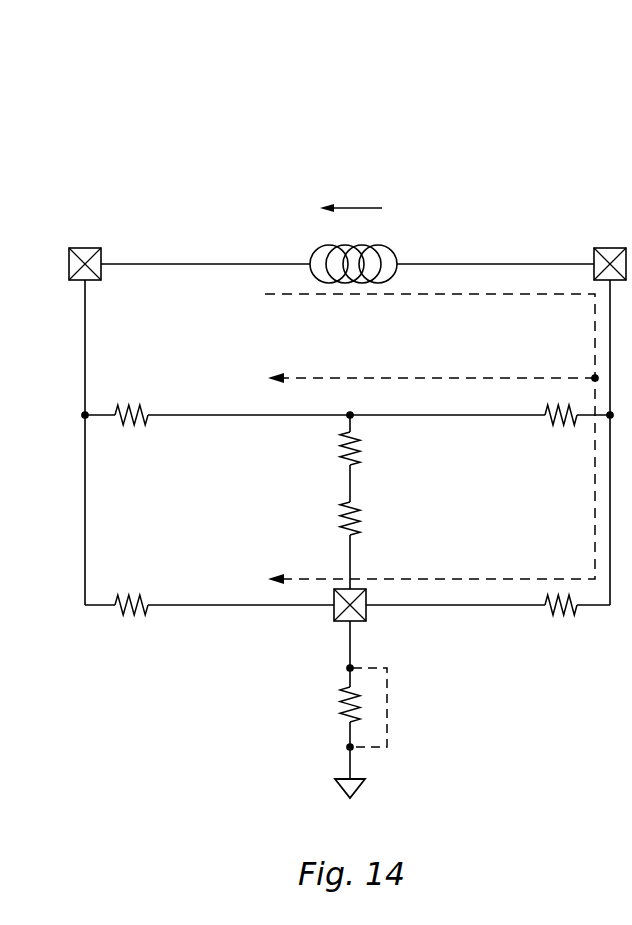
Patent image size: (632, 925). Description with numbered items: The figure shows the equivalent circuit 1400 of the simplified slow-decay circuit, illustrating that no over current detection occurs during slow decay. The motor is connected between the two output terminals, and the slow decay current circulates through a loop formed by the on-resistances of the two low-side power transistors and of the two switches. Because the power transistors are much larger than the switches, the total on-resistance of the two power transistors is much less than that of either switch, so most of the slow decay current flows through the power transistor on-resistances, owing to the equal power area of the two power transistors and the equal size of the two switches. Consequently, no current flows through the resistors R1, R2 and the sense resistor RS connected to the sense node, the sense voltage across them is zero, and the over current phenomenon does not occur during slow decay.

The equivalent circuit 1400 is at (62, 160).
The resistor R1 is at (367, 448).
The resistor R2 is at (367, 518).
The sense resistor RS is at (328, 704).